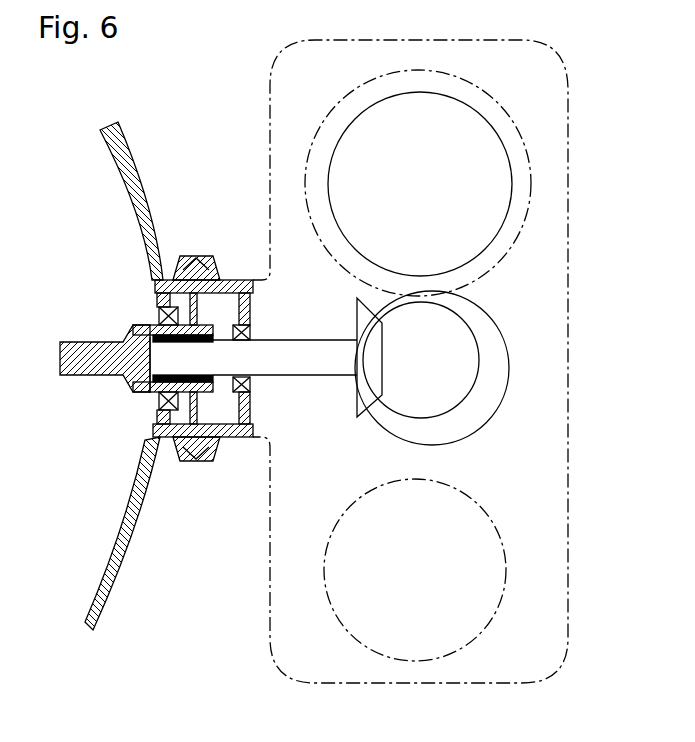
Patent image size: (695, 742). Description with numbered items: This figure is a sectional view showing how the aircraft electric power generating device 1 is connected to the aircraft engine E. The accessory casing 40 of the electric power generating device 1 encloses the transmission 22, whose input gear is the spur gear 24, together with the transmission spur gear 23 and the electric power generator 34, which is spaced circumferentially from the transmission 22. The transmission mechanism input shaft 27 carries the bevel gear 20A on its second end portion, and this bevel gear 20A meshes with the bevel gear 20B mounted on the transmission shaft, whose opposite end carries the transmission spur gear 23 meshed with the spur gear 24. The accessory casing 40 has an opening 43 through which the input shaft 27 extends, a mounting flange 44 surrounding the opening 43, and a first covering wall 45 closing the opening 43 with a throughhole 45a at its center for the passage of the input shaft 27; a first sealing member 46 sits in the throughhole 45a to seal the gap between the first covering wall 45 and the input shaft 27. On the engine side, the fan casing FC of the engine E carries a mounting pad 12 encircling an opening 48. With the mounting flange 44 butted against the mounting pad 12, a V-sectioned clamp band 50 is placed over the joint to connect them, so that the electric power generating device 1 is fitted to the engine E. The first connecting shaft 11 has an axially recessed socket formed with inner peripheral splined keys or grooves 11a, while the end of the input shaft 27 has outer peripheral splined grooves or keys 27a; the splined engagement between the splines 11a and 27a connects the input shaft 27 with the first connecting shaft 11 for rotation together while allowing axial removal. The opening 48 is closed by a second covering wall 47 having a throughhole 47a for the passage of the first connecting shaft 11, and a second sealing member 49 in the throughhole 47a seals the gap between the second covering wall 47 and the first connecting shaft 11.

The electric power generating device 1 is at (455, 361).
The accessory casing 40 is at (570, 190).
The transmission 22 is at (496, 96).
The spur gear 24 is at (506, 147).
The transmission spur gear 23 is at (490, 380).
The bevel gear 20B is at (440, 400).
The bevel gear 20A is at (362, 404).
The electric power generator 34 is at (506, 556).
The transmission mechanism input shaft 27 is at (297, 345).
The outer peripheral splined grooves or keys 27a is at (175, 375).
The first connecting shaft 11 is at (92, 362).
The mounting pad 12 is at (195, 257).
The inner peripheral splined keys or grooves 11a is at (220, 290).
The opening 43 is at (165, 300).
The first covering wall 45 is at (252, 292).
The first sealing member 46 is at (250, 330).
The throughhole 45a is at (250, 388).
The second covering wall 47 is at (155, 398).
The throughhole 47a is at (160, 410).
The opening 48 is at (205, 420).
The second sealing member 49 is at (157, 402).
The mounting flange 44 is at (200, 440).
The V-sectioned clamp band 50 is at (187, 467).
The aircraft engine E is at (139, 388).
The fan casing FC is at (105, 610).